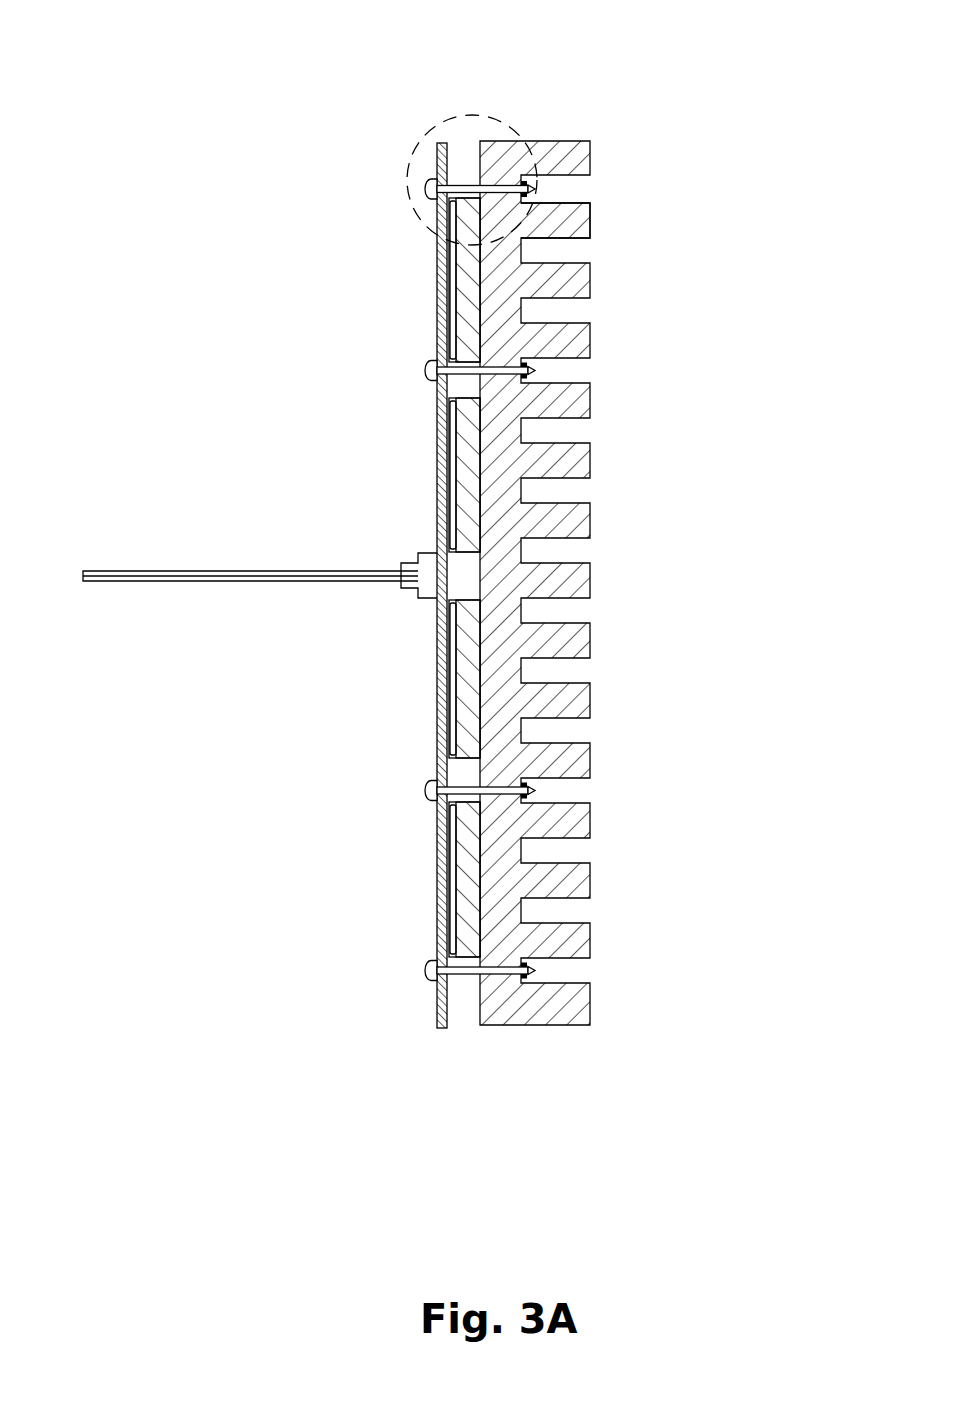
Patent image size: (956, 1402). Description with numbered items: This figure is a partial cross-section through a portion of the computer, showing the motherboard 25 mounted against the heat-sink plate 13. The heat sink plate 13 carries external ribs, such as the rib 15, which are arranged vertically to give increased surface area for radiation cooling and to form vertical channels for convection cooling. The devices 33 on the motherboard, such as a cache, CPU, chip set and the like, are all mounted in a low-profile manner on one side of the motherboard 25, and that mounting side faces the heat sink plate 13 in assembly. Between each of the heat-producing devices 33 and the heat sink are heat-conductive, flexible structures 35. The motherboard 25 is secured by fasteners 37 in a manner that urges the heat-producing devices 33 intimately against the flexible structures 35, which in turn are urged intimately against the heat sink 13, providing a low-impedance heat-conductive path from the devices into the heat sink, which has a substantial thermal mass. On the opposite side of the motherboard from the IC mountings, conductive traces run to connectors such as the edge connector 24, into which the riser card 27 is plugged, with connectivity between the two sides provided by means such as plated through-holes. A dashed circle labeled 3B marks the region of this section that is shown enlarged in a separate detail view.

The heat-sink plate 13 is at (567, 140).
The rib 15 is at (592, 222).
The motherboard 25 is at (436, 157).
The devices 33 is at (458, 250).
The heat-conductive, flexible structures 35 is at (452, 275).
The fasteners 37 is at (473, 184).
The edge connector 24 is at (420, 556).
The riser card 27 is at (163, 572).
The detail region shown in FIG. 3B is at (457, 115).